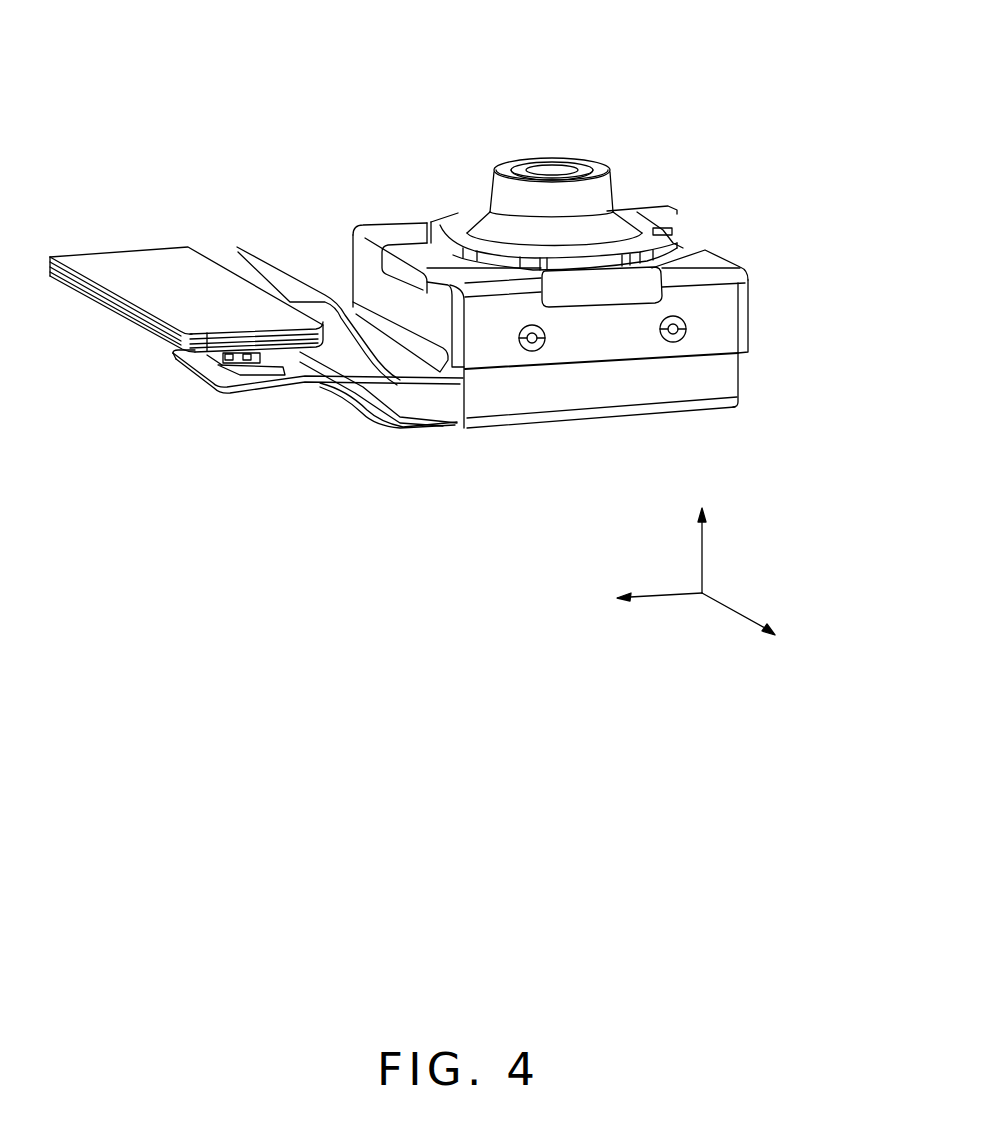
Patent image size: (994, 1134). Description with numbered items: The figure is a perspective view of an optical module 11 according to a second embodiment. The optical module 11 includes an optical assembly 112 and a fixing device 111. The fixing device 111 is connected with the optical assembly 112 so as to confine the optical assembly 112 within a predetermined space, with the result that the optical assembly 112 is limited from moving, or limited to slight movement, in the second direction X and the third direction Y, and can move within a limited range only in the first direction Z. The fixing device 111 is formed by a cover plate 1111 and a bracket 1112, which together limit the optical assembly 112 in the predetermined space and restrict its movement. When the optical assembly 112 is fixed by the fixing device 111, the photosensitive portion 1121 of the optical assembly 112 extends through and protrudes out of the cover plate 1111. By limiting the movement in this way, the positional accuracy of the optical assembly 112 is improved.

The optical module 11 is at (500, 37).
The fixing device 111 is at (845, 300).
The cover plate 1111 is at (720, 333).
The bracket 1112 is at (713, 383).
The optical assembly 112 is at (607, 287).
The photosensitive portion 1121 is at (597, 222).